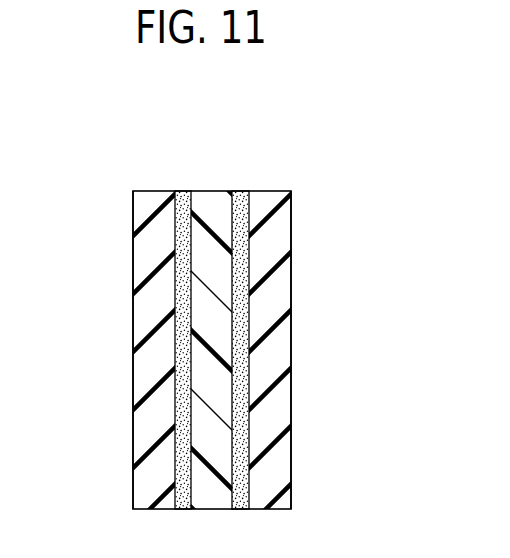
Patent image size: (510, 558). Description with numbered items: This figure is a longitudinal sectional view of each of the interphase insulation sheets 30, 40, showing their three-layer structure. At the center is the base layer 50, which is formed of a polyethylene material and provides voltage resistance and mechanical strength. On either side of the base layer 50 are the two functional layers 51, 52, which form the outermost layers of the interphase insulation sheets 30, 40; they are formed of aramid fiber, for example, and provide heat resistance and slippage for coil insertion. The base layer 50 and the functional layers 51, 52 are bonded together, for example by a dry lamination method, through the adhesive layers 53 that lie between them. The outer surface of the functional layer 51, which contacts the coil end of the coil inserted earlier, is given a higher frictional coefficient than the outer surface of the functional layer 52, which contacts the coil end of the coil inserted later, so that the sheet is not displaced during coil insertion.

The interphase insulation sheet 30 is at (315, 133).
The interphase insulation sheet 40 is at (210, 323).
The base layer 50 is at (222, 282).
The functional layer 51 is at (140, 302).
The functional layer 52 is at (273, 363).
The adhesive layers 53 is at (243, 191).